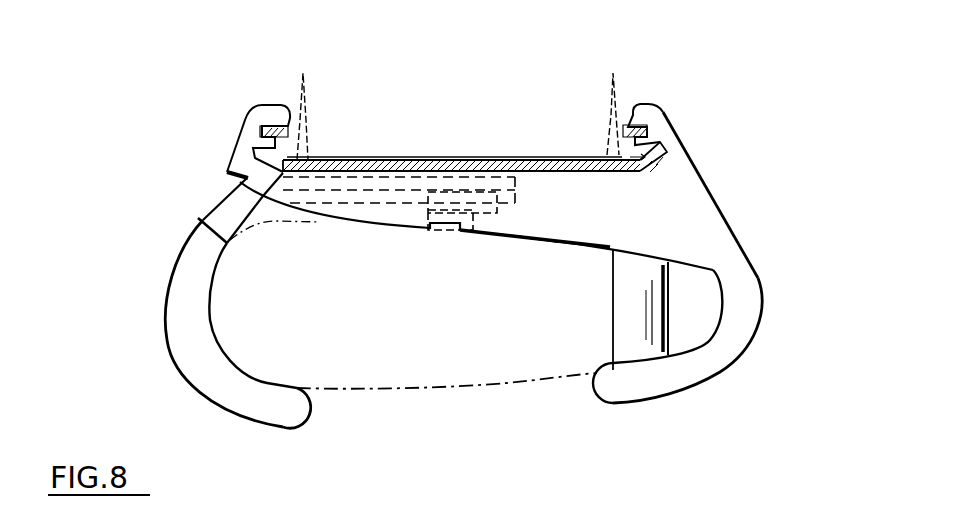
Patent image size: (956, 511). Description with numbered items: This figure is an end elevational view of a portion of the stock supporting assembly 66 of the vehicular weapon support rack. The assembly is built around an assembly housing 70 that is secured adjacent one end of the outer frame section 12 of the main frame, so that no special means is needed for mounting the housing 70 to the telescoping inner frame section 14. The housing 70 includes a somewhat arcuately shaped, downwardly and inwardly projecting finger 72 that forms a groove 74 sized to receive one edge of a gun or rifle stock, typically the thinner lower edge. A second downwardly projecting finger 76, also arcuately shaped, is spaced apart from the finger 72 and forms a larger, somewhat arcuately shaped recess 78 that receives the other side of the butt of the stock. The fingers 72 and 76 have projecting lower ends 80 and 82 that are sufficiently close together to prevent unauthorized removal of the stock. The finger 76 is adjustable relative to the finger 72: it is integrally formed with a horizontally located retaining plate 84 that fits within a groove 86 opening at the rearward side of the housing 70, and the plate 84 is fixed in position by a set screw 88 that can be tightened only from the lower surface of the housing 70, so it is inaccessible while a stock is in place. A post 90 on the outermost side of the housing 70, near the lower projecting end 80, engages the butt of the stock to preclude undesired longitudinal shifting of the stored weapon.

The outer frame section 12 is at (523, 158).
The inner frame section 14 is at (445, 156).
The stock supporting assembly 66 is at (740, 203).
The assembly housing 70 is at (683, 188).
The finger 72 is at (720, 345).
The groove 74 is at (697, 302).
The finger 76 is at (187, 332).
The recess 78 is at (307, 325).
The projecting lower end 80 is at (630, 380).
The projecting lower end 82 is at (243, 397).
The retaining plate 84 is at (272, 222).
The groove 86 is at (378, 205).
The set screw 88 is at (500, 220).
The post 90 is at (640, 302).